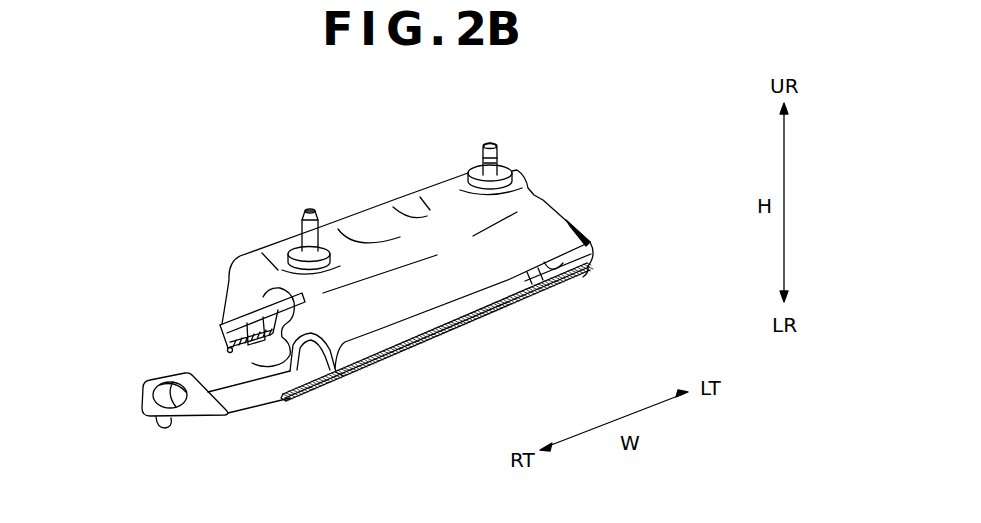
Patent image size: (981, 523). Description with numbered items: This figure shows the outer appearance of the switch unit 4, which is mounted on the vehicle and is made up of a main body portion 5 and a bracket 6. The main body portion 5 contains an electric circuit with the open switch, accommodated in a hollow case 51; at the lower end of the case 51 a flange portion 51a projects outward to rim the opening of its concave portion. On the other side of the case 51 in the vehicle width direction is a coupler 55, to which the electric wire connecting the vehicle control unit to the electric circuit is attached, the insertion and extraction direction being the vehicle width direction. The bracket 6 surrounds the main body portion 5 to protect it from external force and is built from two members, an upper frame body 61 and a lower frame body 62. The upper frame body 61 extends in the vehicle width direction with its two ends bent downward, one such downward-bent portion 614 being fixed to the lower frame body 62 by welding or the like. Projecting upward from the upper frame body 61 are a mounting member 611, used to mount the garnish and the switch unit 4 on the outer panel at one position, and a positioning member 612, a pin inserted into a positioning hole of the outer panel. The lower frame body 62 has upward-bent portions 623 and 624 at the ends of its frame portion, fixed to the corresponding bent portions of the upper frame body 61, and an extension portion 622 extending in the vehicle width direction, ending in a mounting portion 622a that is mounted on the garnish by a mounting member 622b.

The switch unit 4 is at (598, 148).
The main body portion 5 is at (410, 327).
The case 51 is at (468, 309).
The flange portion 51a is at (333, 385).
The coupler 55 is at (228, 318).
The bracket 6 is at (612, 258).
The upper frame body 61 is at (427, 185).
The mounting member 611 is at (487, 140).
The positioning member 612 is at (308, 210).
The portion bent downward 614 is at (557, 292).
The lower frame body 62 is at (588, 278).
The extension portion 622 is at (240, 408).
The mounting portion 622a is at (180, 420).
The mounting member 622b is at (163, 375).
The portion bent upward 623 is at (303, 372).
The portion bent upward 624 is at (583, 230).